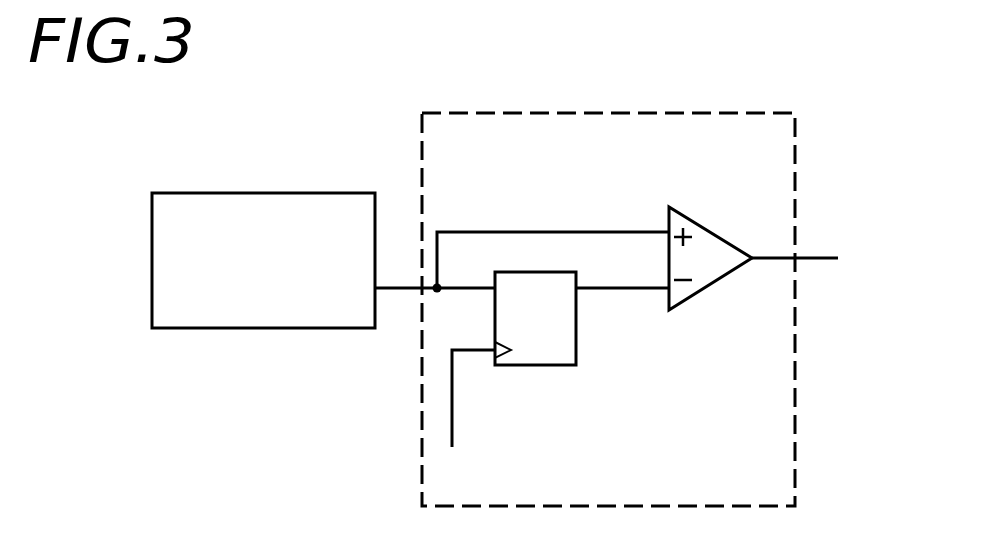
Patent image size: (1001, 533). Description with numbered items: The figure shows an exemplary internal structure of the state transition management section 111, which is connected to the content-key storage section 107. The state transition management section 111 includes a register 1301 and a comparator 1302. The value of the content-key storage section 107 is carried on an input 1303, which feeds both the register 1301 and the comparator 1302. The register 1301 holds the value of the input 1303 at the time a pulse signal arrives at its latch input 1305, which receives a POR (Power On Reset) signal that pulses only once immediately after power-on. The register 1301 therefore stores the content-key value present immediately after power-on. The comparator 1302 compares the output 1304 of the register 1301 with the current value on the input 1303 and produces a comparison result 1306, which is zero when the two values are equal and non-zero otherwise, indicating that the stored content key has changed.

The content-key storage section 107 is at (260, 192).
The state transition management section 111 is at (610, 112).
The register 1301 is at (563, 366).
The comparator 1302 is at (712, 286).
The input 1303 is at (540, 228).
The output 1304 is at (630, 284).
The latch input 1305 is at (455, 435).
The comparison result 1306 is at (815, 262).